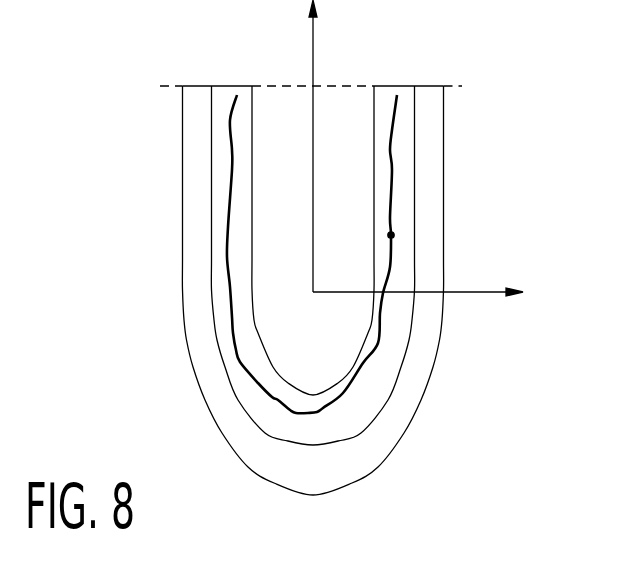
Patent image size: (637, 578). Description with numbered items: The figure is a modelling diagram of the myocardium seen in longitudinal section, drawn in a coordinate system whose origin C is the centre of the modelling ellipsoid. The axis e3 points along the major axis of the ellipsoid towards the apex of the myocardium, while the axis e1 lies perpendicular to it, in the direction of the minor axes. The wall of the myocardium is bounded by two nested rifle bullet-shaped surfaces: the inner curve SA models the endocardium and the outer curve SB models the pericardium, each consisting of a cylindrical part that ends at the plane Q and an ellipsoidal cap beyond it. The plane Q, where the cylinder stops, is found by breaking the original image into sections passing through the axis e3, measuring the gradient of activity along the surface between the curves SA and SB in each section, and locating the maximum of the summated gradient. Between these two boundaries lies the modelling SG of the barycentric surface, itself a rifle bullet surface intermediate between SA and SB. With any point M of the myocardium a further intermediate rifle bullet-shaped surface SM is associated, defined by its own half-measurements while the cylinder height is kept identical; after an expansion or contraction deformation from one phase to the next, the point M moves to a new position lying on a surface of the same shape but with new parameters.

The plane where the cylinder stops Q is at (223, 86).
The curve modelling the pericardium SB is at (444, 131).
The modelling of the barycentric surface G SG is at (403, 353).
The curve modelling the endocardium SA is at (252, 289).
The rifle bullet-shaped surface through point M SM is at (395, 179).
The point of the myocardium M is at (391, 235).
The origin C is at (298, 302).
The axis e3 is at (339, 146).
The axis e1 is at (444, 297).